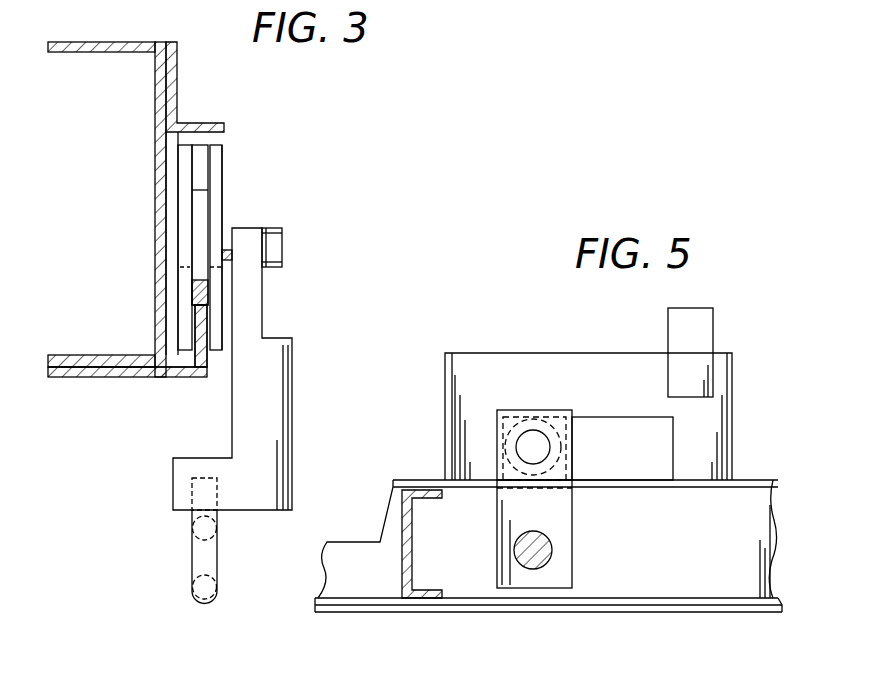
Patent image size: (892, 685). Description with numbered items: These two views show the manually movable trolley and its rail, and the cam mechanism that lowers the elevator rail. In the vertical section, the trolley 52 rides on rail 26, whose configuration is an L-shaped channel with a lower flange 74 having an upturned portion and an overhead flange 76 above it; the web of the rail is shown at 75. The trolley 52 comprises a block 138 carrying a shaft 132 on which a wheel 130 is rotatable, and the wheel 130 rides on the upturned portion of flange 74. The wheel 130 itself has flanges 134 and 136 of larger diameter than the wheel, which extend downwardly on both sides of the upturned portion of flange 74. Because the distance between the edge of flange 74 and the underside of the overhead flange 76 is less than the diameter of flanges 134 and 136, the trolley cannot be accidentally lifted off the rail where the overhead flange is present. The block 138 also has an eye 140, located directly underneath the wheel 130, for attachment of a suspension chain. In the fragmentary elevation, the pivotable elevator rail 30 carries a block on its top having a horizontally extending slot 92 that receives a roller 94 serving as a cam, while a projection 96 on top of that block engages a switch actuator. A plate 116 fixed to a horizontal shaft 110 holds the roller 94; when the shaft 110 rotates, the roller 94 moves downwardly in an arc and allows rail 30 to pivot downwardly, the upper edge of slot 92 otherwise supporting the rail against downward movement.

In FIG. 3, the rail 26 is at (153, 200).
In FIG. 3, the overhead flange 76 is at (177, 98).
In FIG. 3, the channel web 75 is at (157, 307).
In FIG. 3, the flange 74 is at (205, 358).
In FIG. 3, the wheel flange 136 is at (185, 150).
In FIG. 3, the wheel flange 134 is at (215, 157).
In FIG. 3, the trolley 52 is at (222, 177).
In FIG. 3, the wheel 130 is at (198, 208).
In FIG. 3, the shaft 132 is at (226, 252).
In FIG. 3, the block 138 is at (272, 358).
In FIG. 3, the eye 140 is at (192, 553).
In FIG. 5, the rail 30 is at (622, 618).
In FIG. 5, the projection 96 is at (668, 332).
In FIG. 5, the slot 92 is at (626, 420).
In FIG. 5, the roller 94 is at (548, 468).
In FIG. 5, the plate 116 is at (558, 513).
In FIG. 5, the shaft 110 is at (552, 550).